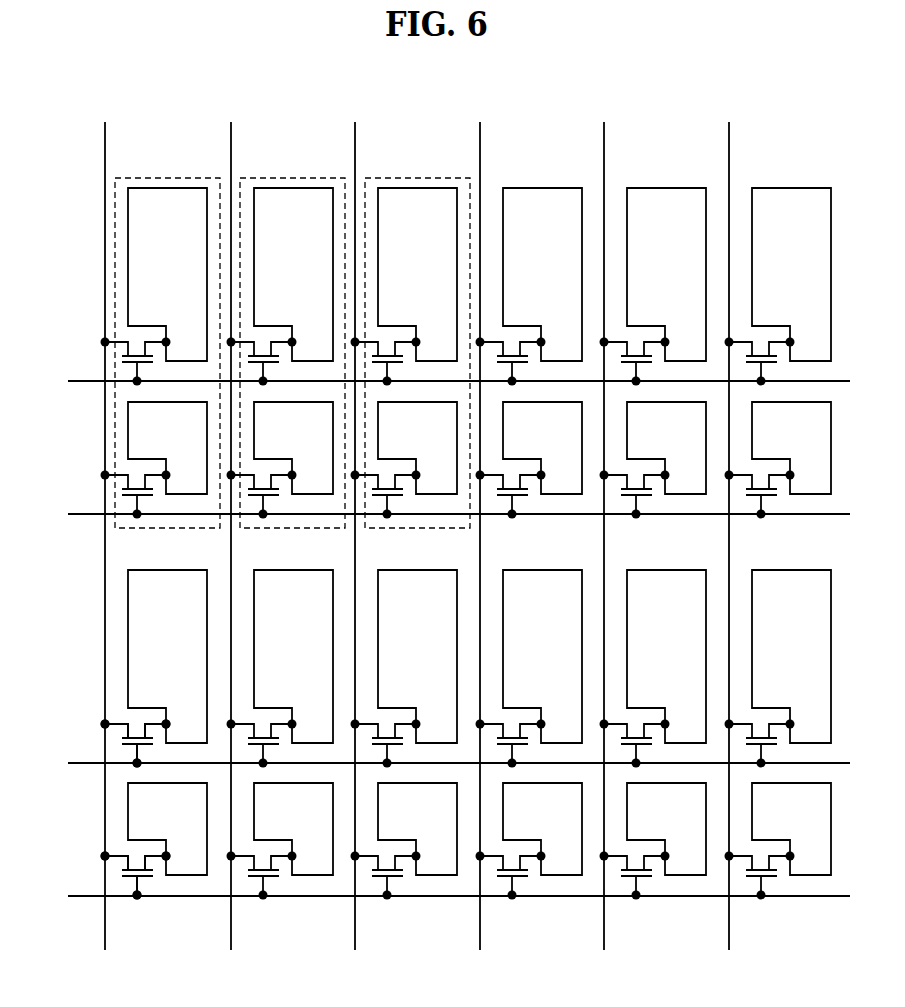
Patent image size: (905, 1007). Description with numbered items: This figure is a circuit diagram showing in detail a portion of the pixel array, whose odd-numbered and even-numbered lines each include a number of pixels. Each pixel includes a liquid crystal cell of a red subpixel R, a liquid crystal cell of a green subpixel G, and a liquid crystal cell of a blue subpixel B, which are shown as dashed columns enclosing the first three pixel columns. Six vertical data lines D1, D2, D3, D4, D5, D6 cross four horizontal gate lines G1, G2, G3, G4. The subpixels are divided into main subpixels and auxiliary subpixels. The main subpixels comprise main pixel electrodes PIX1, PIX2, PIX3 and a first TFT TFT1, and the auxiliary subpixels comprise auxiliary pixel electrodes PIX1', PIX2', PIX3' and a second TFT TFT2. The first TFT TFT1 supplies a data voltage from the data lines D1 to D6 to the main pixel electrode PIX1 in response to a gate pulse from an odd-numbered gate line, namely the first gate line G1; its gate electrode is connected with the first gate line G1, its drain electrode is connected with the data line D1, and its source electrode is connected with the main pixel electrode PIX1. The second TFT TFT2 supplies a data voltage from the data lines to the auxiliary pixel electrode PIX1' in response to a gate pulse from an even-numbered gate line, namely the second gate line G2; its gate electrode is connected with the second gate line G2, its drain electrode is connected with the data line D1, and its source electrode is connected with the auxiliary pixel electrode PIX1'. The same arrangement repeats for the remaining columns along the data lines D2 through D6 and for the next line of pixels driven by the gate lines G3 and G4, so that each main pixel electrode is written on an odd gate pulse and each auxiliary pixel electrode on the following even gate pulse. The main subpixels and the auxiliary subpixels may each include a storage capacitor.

The data line D1 is at (105, 525).
The data line D2 is at (231, 525).
The data line D3 is at (355, 525).
The data line D4 is at (480, 525).
The data line D5 is at (604, 525).
The data line D6 is at (729, 525).
The first gate line G1 is at (446, 380).
The second gate line G2 is at (446, 513).
The gate line G3 is at (446, 762).
The gate line G4 is at (446, 895).
The first TFT TFT1 is at (109, 355).
The second TFT TFT2 is at (109, 488).
The main pixel electrode PIX1 is at (167, 274).
The main pixel electrode PIX2 is at (293, 274).
The main pixel electrode PIX3 is at (417, 274).
The auxiliary pixel electrode PIX1' is at (167, 448).
The auxiliary pixel electrode PIX2' is at (293, 448).
The auxiliary pixel electrode PIX3' is at (417, 448).
The red subpixel R is at (167, 177).
The green subpixel G is at (293, 177).
The blue subpixel B is at (418, 177).